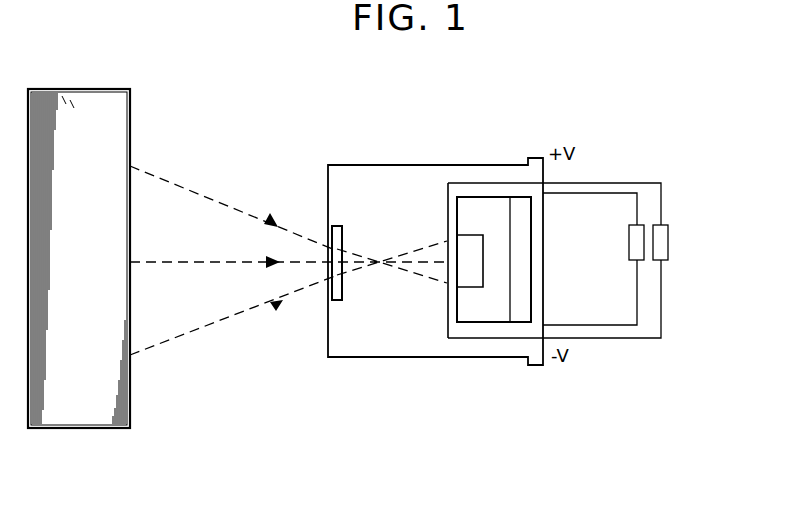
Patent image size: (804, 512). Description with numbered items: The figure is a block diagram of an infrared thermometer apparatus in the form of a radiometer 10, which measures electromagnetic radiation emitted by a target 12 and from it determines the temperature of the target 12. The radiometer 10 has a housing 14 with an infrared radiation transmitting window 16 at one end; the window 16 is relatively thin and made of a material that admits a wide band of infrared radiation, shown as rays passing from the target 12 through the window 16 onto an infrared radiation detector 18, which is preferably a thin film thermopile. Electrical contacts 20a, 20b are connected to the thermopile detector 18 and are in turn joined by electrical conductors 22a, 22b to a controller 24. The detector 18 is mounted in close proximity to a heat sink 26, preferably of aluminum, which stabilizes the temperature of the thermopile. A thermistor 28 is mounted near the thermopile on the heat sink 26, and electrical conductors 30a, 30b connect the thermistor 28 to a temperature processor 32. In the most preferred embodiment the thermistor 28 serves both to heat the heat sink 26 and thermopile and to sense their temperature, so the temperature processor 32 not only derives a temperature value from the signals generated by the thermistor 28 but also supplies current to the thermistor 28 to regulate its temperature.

The radiometer 10 is at (583, 108).
The target 12 is at (130, 132).
The housing 14 is at (352, 165).
The infrared radiation transmitting window 16 is at (332, 258).
The infrared radiation detector 18 is at (446, 246).
The electrical contact 20a is at (447, 222).
The electrical contact 20b is at (447, 292).
The electrical conductor 22a is at (447, 190).
The electrical conductor 22b is at (447, 333).
The controller 24 is at (668, 242).
The heat sink 26 is at (485, 207).
The thermistor 28 is at (520, 272).
The electrical conductor 30a is at (588, 193).
The electrical conductor 30b is at (592, 300).
The temperature processor 32 is at (629, 245).